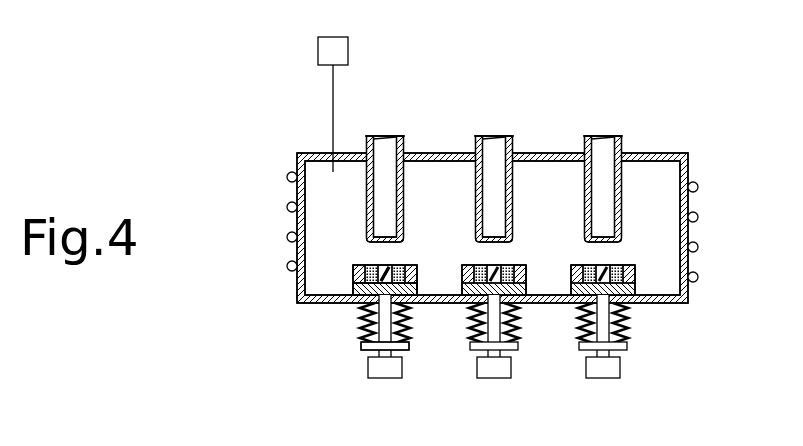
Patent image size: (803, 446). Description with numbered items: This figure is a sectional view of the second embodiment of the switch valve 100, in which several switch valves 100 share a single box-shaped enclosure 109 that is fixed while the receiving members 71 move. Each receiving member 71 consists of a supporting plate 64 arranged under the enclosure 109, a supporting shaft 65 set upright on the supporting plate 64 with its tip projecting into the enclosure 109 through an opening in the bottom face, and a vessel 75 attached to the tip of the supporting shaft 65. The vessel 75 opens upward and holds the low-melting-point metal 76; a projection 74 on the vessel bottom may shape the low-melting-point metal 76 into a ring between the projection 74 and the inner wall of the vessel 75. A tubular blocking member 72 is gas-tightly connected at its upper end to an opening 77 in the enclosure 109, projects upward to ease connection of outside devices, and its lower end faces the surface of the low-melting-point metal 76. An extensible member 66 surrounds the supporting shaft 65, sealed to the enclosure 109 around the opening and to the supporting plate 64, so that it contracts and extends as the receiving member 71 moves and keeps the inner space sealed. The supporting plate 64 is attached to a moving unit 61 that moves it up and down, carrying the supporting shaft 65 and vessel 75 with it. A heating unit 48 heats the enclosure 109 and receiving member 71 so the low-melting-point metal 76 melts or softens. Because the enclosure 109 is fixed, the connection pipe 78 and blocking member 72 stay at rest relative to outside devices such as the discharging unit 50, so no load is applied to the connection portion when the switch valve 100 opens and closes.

The discharging unit 50 is at (318, 52).
The connection pipe 78 is at (333, 123).
The heating unit 48 is at (287, 176).
The enclosure 109 is at (287, 208).
The blocking member 72 is at (403, 185).
The opening 77 is at (400, 138).
The switch valve 100 is at (383, 130).
The projection 74 is at (353, 272).
The vessel 75 is at (353, 290).
The low-melting-point metal 76 is at (395, 265).
The supporting shaft 65 is at (378, 322).
The extensible member 66 is at (408, 337).
The supporting plate 64 is at (329, 383).
The moving unit 61 is at (361, 360).
The receiving member 71 is at (339, 321).